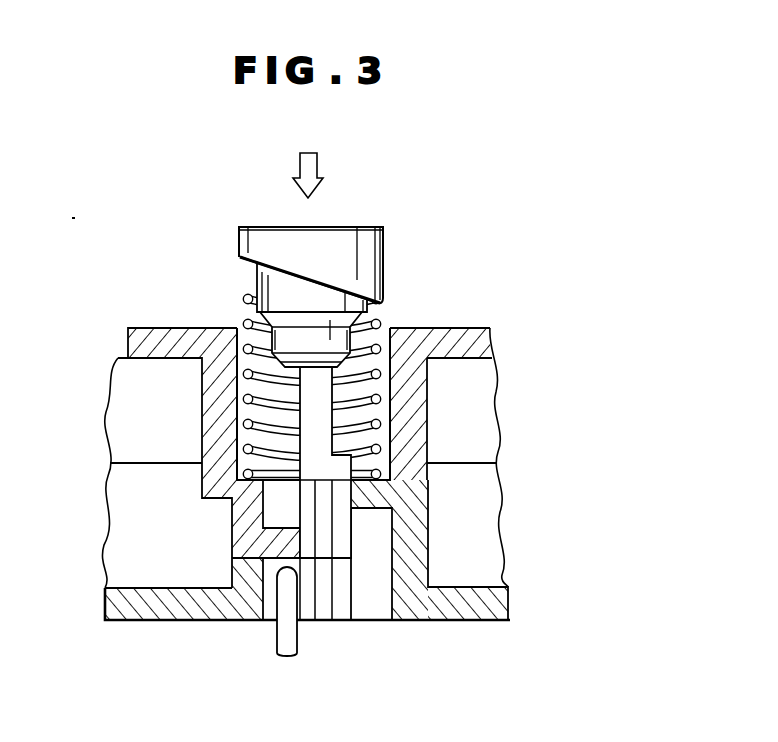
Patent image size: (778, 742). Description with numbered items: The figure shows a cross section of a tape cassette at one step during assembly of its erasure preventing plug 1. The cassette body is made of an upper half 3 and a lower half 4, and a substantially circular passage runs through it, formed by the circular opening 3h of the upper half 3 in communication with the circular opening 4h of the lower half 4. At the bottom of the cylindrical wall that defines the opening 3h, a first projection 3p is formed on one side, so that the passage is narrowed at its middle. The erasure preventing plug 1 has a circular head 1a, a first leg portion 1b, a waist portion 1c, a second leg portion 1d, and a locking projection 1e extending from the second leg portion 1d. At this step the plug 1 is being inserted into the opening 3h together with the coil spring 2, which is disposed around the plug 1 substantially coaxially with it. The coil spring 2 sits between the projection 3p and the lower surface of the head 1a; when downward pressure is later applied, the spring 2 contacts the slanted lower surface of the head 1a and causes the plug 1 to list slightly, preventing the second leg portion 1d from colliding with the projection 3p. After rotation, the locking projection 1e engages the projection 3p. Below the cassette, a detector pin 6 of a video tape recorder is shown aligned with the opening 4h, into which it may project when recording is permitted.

The erasure preventing plug 1 is at (320, 385).
The circular head 1a is at (367, 250).
The first leg portion 1b is at (252, 268).
The waist portion 1c is at (378, 322).
The second leg portion 1d is at (314, 388).
The locking projection 1e is at (327, 485).
The coil spring 2 is at (382, 454).
The upper half 3 is at (299, 423).
The circular opening 3h is at (243, 327).
The first projection 3p is at (255, 548).
The lower half 4 is at (307, 589).
The circular opening 4h is at (363, 603).
The detector pin 6 is at (282, 628).